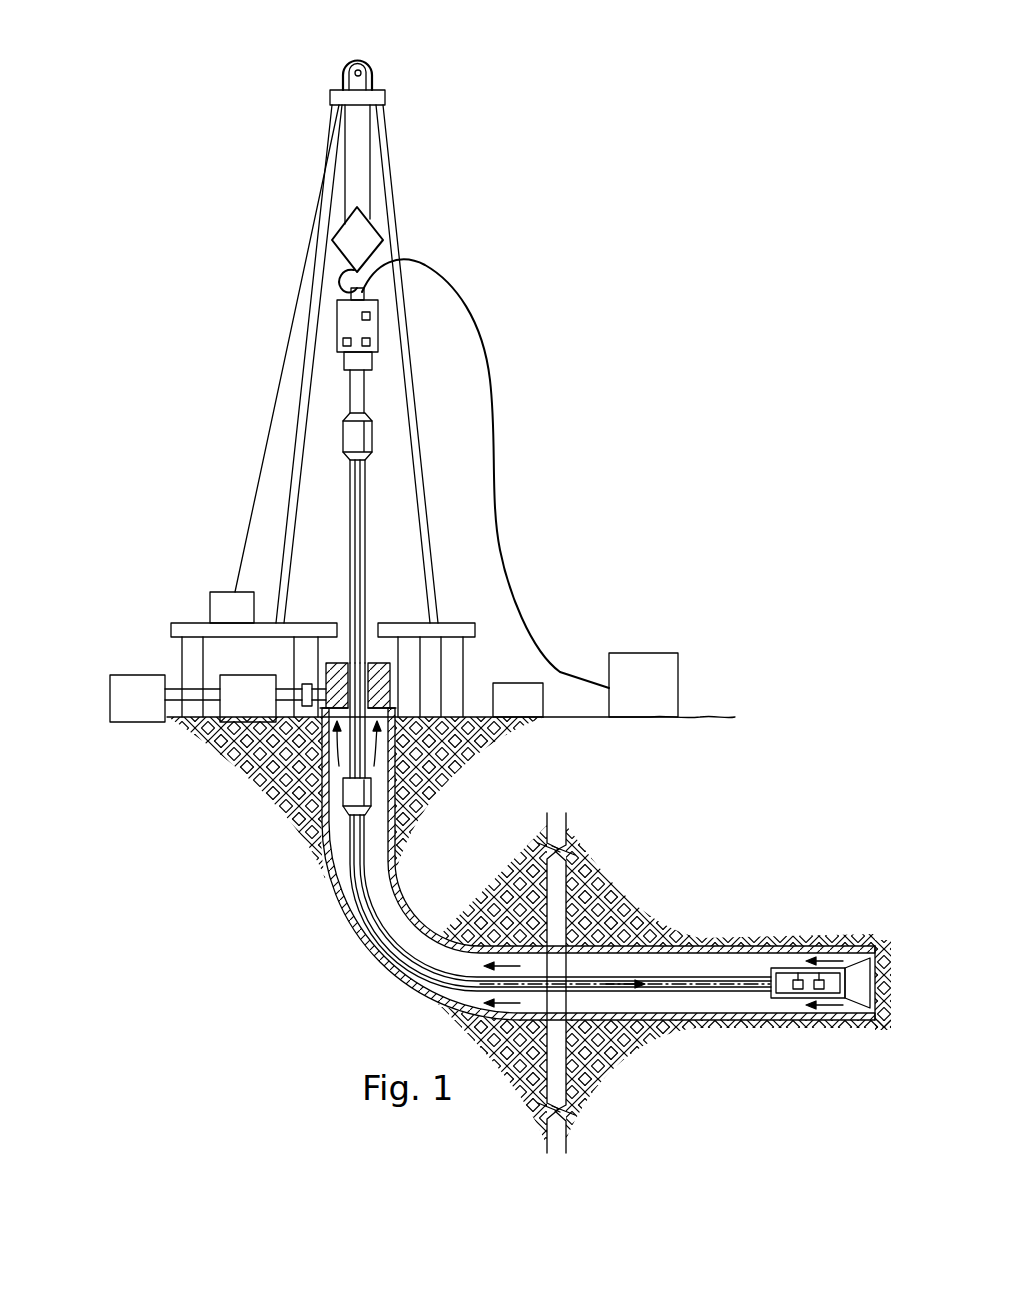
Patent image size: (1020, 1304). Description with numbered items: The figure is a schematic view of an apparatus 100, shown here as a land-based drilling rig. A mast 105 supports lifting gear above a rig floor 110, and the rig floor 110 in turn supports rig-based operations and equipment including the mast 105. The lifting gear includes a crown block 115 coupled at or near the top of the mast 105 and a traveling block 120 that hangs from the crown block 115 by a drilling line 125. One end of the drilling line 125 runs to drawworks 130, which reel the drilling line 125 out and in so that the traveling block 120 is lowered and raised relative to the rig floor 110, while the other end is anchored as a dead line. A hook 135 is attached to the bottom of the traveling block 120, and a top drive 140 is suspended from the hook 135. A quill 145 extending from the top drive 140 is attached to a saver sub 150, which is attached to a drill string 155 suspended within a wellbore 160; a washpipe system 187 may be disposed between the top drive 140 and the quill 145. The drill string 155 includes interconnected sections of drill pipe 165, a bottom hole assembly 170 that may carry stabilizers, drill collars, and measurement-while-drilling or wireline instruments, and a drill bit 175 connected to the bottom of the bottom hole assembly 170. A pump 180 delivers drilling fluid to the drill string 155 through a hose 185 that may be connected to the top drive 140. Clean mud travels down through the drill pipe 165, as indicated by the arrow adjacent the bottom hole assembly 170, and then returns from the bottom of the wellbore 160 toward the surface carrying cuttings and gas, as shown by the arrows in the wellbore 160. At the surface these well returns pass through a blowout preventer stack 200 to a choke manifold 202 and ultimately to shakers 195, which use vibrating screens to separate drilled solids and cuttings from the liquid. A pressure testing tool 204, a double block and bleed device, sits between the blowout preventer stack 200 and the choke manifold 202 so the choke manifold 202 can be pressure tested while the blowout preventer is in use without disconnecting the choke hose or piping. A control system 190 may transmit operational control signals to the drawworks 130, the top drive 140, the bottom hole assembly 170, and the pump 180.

The apparatus 100 is at (704, 146).
The mast 105 is at (389, 150).
The rig floor 110 is at (171, 627).
The crown block 115 is at (356, 61).
The traveling block 120 is at (378, 254).
The drilling line 125 is at (343, 150).
The drawworks 130 is at (210, 604).
The hook 135 is at (338, 278).
The top drive 140 is at (336, 322).
The quill 145 is at (349, 392).
The saver sub 150 is at (342, 440).
The drill string 155 is at (343, 507).
The wellbore 160 is at (338, 926).
The drill pipe 165 is at (350, 632).
The bottom hole assembly 170 is at (800, 1000).
The drill bit 175 is at (855, 963).
The pump 180 is at (648, 652).
The hose 185 is at (493, 430).
The washpipe system 187 is at (373, 362).
The control system 190 is at (506, 682).
The shakers 195 is at (158, 708).
The blowout preventer stack 200 is at (382, 662).
The choke manifold 202 is at (268, 708).
The pressure testing tool 204 is at (304, 684).